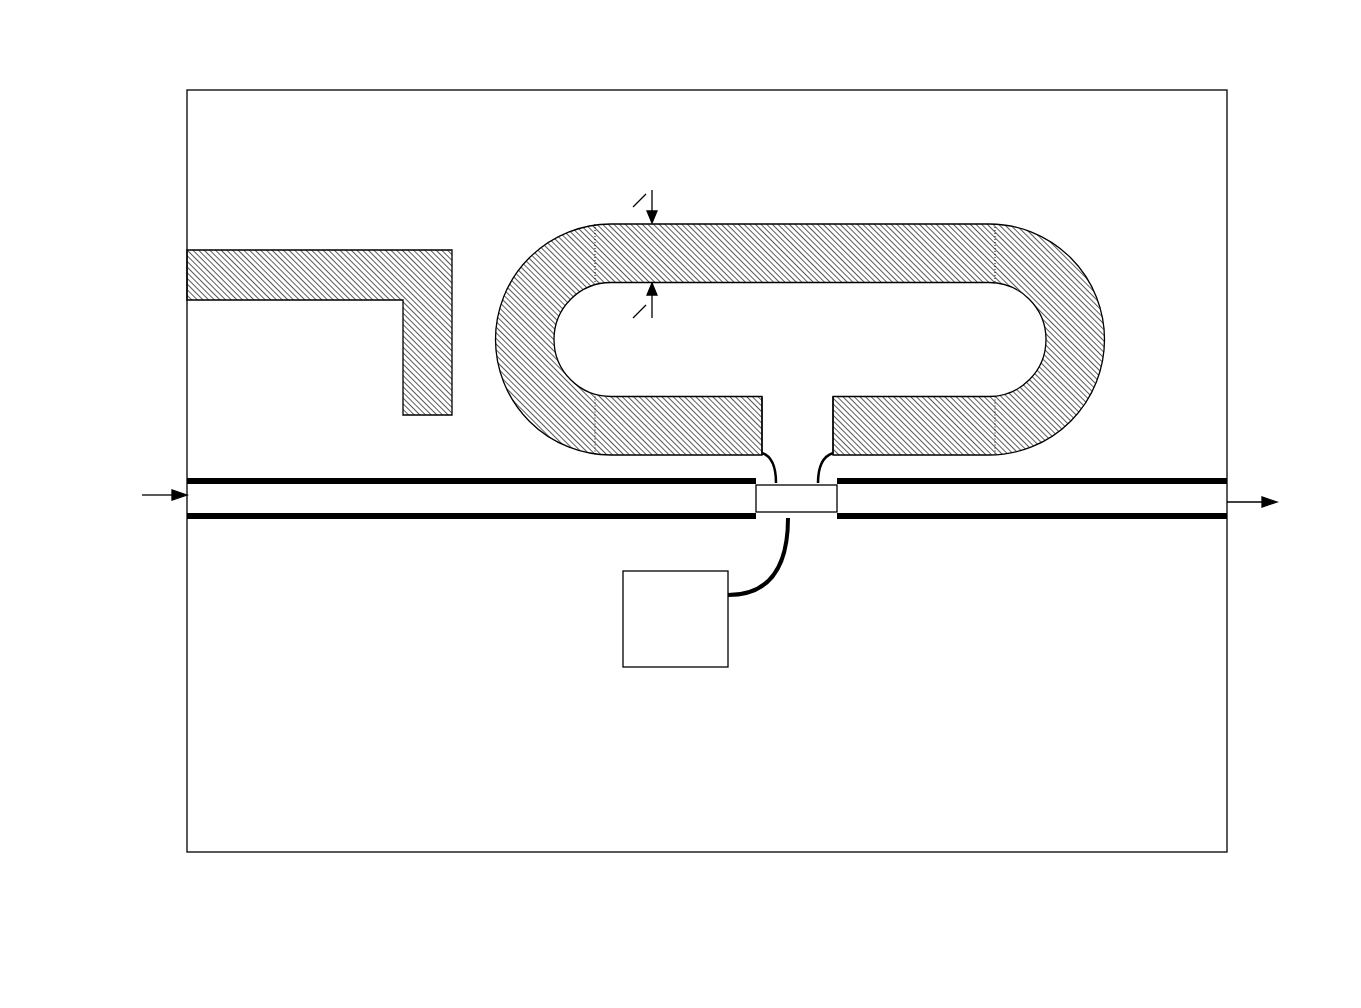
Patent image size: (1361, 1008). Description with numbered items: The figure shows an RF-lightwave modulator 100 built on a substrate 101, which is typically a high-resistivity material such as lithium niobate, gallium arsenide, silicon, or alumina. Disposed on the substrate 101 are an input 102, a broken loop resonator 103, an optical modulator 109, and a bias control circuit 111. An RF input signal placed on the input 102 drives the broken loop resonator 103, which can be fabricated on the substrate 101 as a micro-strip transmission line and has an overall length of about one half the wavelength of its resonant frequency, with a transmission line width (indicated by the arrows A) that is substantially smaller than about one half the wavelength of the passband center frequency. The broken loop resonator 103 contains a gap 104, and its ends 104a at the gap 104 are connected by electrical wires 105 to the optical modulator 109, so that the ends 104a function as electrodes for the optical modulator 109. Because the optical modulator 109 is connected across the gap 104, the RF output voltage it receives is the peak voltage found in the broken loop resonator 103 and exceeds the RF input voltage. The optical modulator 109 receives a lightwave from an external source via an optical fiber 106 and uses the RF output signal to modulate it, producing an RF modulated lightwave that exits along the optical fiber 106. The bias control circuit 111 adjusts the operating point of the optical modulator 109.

The RF-lightwave modulator 100 is at (635, 30).
The substrate 101 is at (944, 90).
The input 102 is at (342, 250).
The broken loop resonator 103 is at (847, 223).
The gap 104 is at (794, 412).
The ends 104a is at (763, 408).
The electrical wires 105 is at (812, 472).
The optical fiber 106 is at (458, 520).
The optical modulator 109 is at (812, 517).
The bias control circuit 111 is at (728, 630).